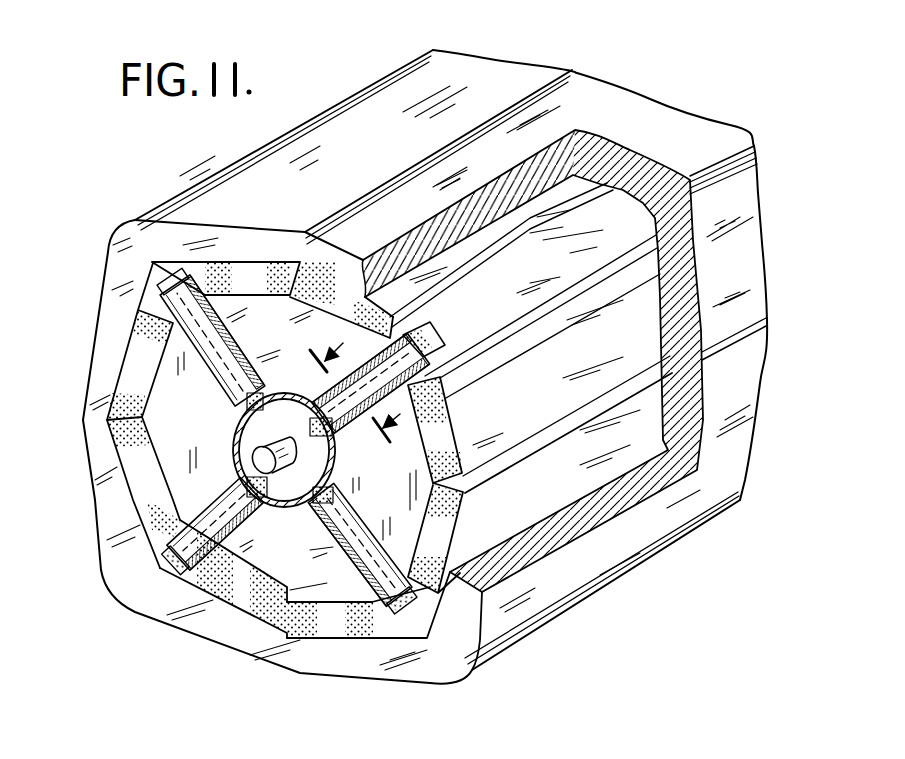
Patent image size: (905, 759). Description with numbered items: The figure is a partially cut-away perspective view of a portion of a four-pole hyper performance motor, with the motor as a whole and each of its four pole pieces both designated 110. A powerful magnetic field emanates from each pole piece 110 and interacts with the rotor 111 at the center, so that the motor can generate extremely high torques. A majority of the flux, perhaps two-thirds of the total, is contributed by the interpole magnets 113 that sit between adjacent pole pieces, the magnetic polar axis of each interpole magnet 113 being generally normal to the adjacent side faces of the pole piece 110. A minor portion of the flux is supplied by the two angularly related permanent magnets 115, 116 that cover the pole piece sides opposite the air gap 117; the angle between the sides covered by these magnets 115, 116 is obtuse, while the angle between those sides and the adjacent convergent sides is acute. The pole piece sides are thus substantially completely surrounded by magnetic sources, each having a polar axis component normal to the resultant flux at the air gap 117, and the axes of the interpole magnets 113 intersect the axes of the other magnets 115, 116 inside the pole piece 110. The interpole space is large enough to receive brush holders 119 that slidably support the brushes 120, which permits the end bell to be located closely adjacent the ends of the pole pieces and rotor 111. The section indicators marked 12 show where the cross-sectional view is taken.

The pole piece 110 is at (660, 88).
The rotor 111 is at (293, 482).
The interpole magnet 113 is at (216, 380).
The permanent magnet 115 is at (257, 270).
The permanent magnet 116 is at (337, 290).
The air gap 117 is at (308, 423).
The brush holder 119 is at (200, 328).
The brush 120 is at (258, 397).
The section line indicator 12 is at (362, 389).